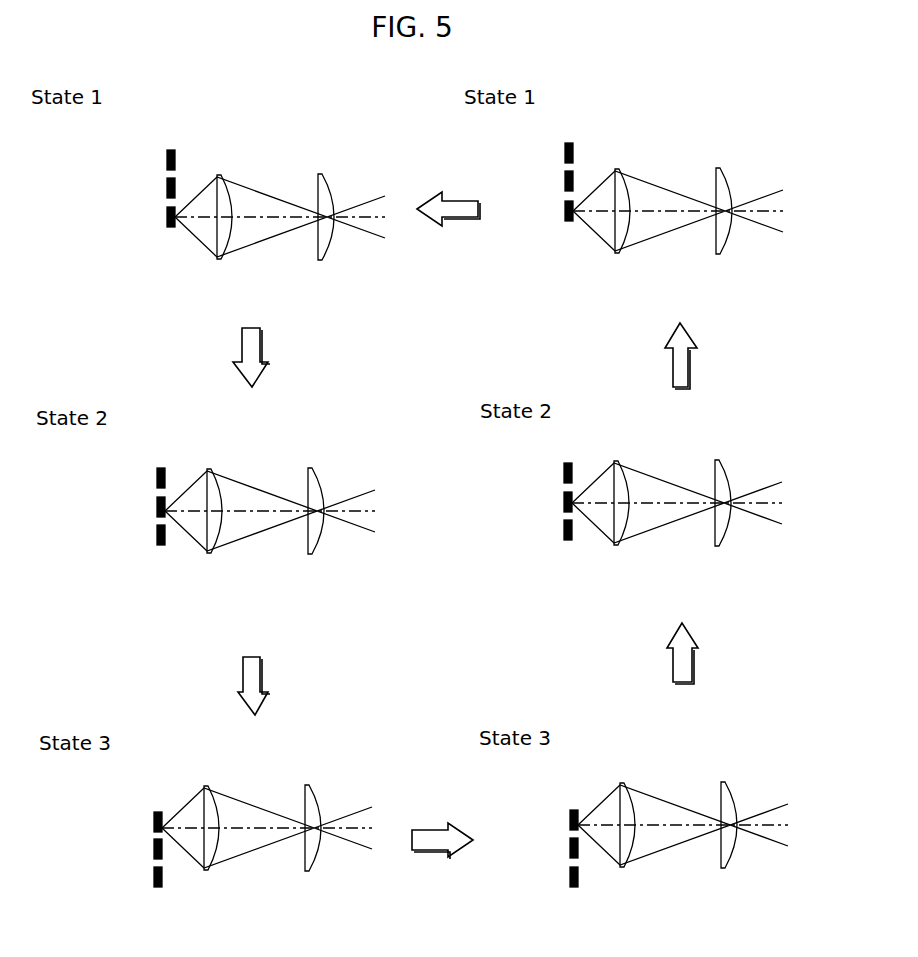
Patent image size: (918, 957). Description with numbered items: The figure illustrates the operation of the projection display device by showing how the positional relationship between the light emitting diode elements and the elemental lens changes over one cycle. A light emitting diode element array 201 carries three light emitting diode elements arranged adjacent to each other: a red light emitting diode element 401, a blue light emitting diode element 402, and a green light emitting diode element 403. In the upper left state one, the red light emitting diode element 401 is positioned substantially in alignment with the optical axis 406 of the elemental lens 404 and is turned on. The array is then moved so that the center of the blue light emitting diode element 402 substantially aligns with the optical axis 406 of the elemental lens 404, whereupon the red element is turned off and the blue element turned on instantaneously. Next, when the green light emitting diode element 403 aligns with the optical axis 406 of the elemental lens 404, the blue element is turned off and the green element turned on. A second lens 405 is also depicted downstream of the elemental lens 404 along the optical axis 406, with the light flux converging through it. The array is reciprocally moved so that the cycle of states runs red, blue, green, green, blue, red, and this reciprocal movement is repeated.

The light emitting diode element array 201 is at (172, 228).
The red light emitting diode element 401 is at (166, 216).
The blue light emitting diode element 402 is at (166, 187).
The green light emitting diode element 403 is at (166, 159).
The elemental lens 404 is at (223, 174).
The condensing lens 405 is at (323, 174).
The optical axis 406 is at (276, 223).